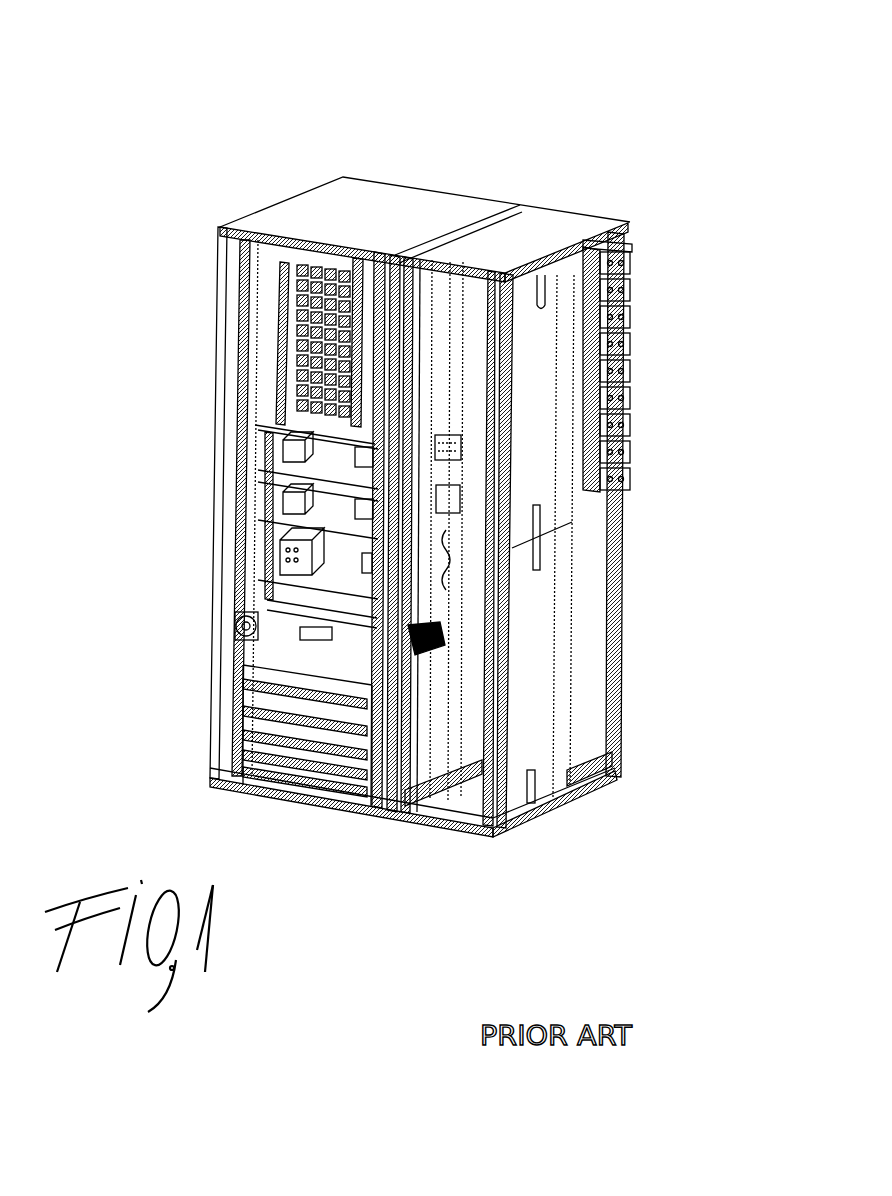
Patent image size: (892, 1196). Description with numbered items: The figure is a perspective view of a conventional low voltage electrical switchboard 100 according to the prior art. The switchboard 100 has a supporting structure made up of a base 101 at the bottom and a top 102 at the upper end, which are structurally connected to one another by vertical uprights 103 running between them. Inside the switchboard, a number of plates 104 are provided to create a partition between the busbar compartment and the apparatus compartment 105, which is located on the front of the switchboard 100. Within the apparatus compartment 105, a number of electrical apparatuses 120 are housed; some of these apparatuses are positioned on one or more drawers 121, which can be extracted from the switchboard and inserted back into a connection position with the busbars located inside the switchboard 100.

The switchboard 100 is at (528, 118).
The base 101 is at (387, 825).
The top 102 is at (627, 223).
The vertical uprights 103 is at (262, 293).
The plates 104 is at (290, 388).
The apparatus compartment 105 is at (290, 583).
The electrical apparatuses 120 is at (290, 492).
The drawers 121 is at (280, 520).